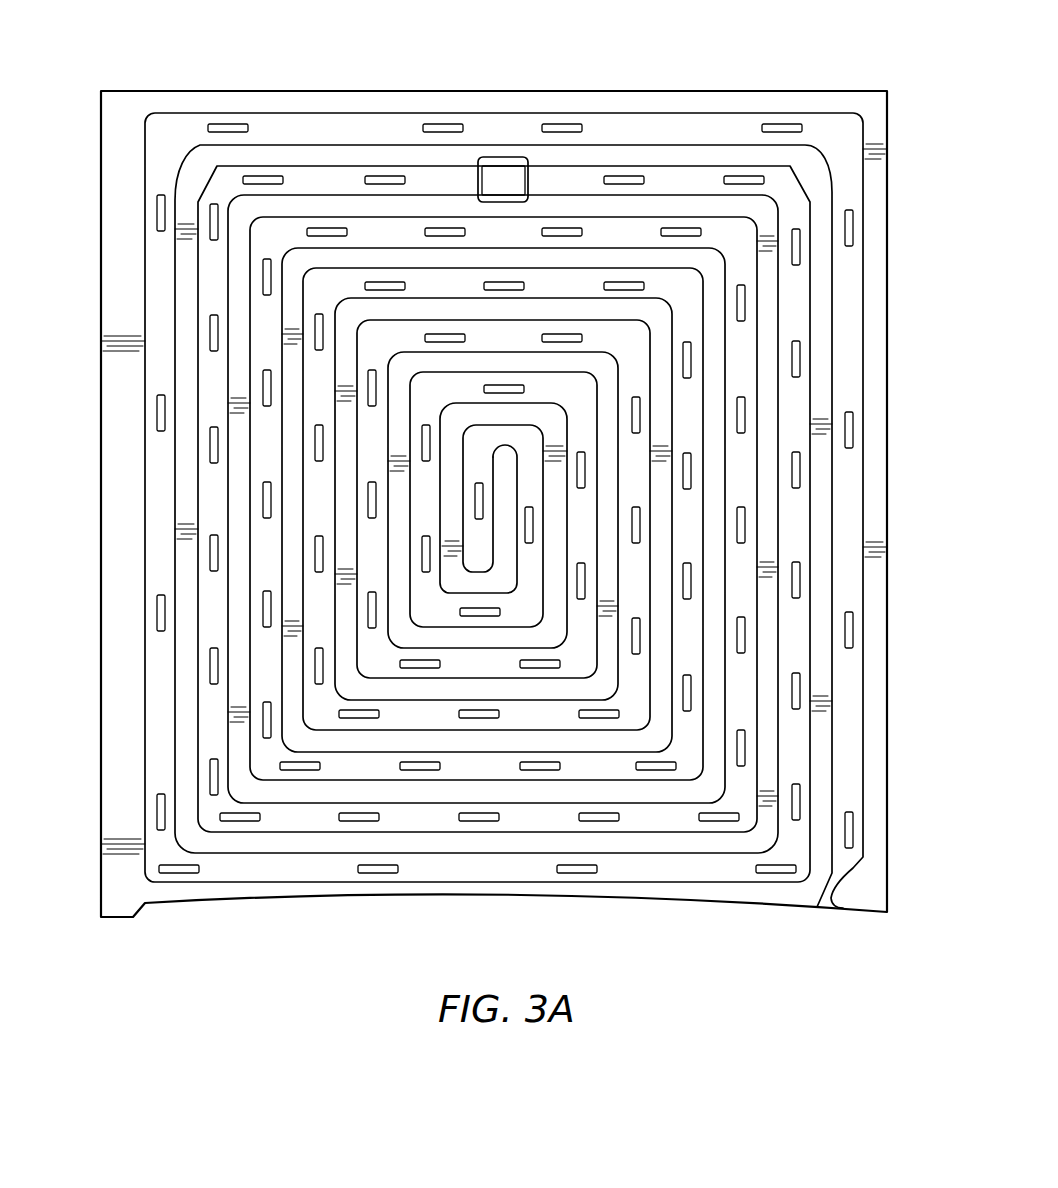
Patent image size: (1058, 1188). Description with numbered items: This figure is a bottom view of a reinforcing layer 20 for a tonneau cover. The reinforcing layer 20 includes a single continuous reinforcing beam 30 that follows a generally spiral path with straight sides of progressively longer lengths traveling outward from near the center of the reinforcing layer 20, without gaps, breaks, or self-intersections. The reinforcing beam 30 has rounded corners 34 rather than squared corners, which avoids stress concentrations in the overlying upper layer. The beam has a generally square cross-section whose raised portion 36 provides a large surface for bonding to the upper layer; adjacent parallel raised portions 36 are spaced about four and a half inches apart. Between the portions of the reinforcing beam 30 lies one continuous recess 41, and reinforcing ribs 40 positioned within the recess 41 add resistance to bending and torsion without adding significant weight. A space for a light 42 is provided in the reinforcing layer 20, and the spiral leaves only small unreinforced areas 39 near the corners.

The reinforcing layer 20 is at (890, 115).
The reinforcing beam 30 is at (355, 148).
The rounded corners 34 is at (400, 362).
The raised portion 36 is at (743, 705).
The unreinforced areas 39 is at (760, 680).
The reinforcing rib 40 is at (157, 413).
The recess 41 is at (210, 597).
The light 42 is at (502, 178).